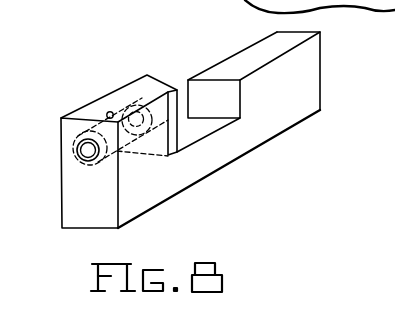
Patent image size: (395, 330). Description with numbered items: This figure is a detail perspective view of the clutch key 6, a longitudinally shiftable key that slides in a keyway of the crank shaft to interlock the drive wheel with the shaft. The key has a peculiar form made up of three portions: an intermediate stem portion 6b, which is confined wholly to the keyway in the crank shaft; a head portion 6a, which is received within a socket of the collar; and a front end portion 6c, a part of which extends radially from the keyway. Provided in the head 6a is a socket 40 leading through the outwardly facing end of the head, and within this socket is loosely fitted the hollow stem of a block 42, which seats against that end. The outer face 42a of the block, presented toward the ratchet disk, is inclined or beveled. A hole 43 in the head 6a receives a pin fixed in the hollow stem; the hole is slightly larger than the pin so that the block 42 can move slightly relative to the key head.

The clutch key 6 is at (169, 112).
The head portion 6a is at (67, 135).
The intermediate stem portion 6b is at (218, 140).
The front end portion 6c is at (313, 45).
The socket 40 is at (102, 119).
The block 42 is at (140, 83).
The outer face of block 42a is at (173, 87).
The hole 43 is at (108, 112).